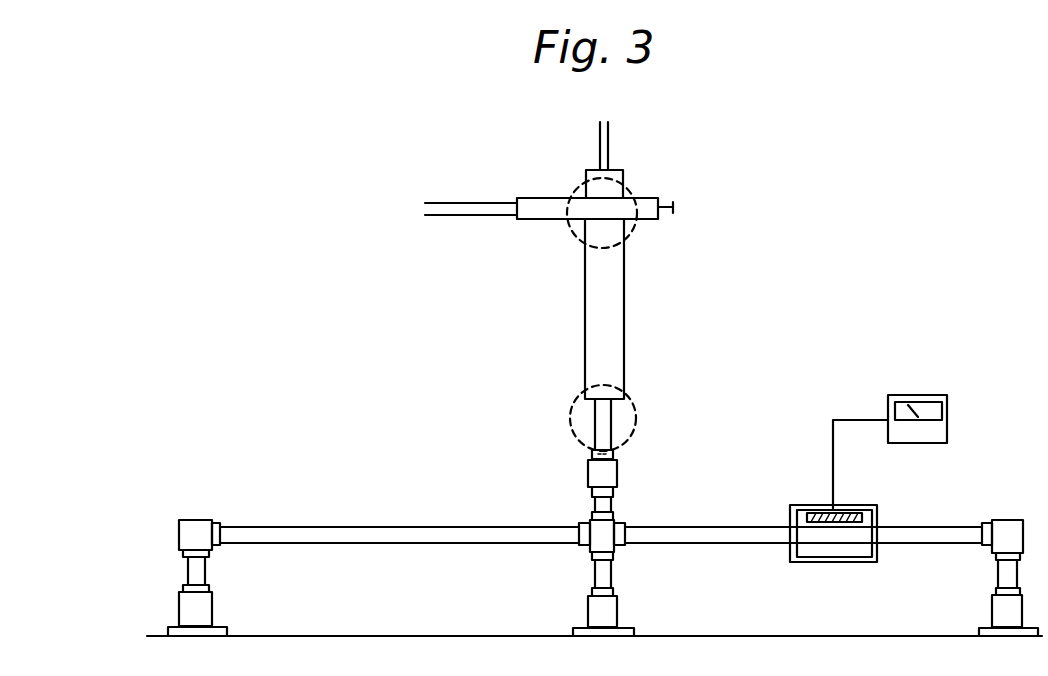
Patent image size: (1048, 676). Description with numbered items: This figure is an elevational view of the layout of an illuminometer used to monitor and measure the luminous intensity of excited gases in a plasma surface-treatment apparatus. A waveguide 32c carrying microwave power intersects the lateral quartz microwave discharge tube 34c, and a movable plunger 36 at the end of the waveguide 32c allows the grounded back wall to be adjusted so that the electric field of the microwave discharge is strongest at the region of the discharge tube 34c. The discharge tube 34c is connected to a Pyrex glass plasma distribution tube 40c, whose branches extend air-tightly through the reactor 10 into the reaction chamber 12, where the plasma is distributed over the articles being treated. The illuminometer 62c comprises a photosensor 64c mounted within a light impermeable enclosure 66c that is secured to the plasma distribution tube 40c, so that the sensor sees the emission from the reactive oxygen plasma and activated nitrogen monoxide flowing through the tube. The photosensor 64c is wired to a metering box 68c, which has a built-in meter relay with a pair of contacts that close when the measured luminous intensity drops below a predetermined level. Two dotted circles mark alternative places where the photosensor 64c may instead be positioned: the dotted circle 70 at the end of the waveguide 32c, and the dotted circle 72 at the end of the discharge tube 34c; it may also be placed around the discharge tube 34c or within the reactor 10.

The reactor 10 is at (423, 636).
The reaction chamber 12 is at (635, 664).
The waveguide 32c is at (537, 197).
The microwave discharge tube 34c is at (625, 318).
The movable plunger 36 is at (668, 200).
The plasma distribution tube 40c is at (384, 525).
The illuminometer 62c is at (855, 393).
The photosensor 64c is at (853, 506).
The light impermeable enclosure 66c is at (830, 565).
The metering box 68c is at (949, 424).
The dotted circle 70 is at (633, 228).
The dotted circle 72 is at (636, 428).